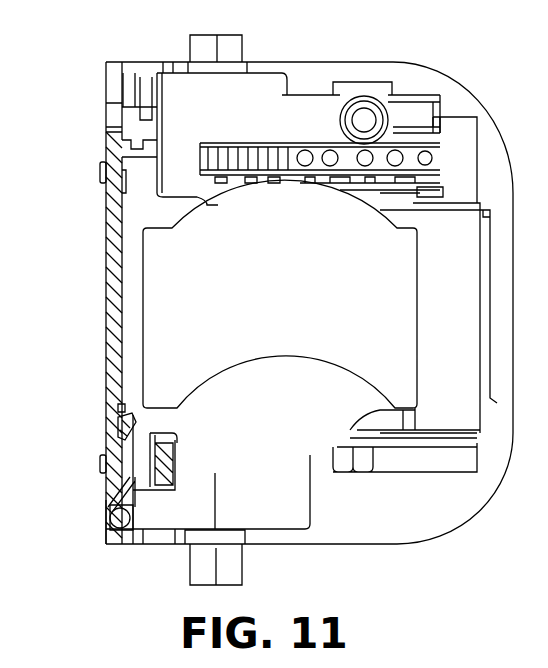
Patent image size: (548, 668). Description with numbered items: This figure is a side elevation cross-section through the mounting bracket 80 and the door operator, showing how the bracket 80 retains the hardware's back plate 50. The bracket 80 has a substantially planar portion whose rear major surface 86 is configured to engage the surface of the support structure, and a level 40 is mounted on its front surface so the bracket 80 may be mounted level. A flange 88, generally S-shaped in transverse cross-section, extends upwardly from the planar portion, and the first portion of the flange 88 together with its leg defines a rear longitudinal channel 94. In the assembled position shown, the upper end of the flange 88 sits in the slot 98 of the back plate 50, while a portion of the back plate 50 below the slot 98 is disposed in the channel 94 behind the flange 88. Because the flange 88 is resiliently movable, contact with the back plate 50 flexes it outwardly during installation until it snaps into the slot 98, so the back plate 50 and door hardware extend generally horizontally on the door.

The back plate 50 is at (101, 304).
The slot 98 is at (123, 411).
The rear longitudinal channel 94 is at (118, 425).
The flange 88 is at (136, 441).
The rear major surface 86 is at (108, 490).
The mounting bracket 80 is at (100, 524).
The level 40 is at (131, 518).